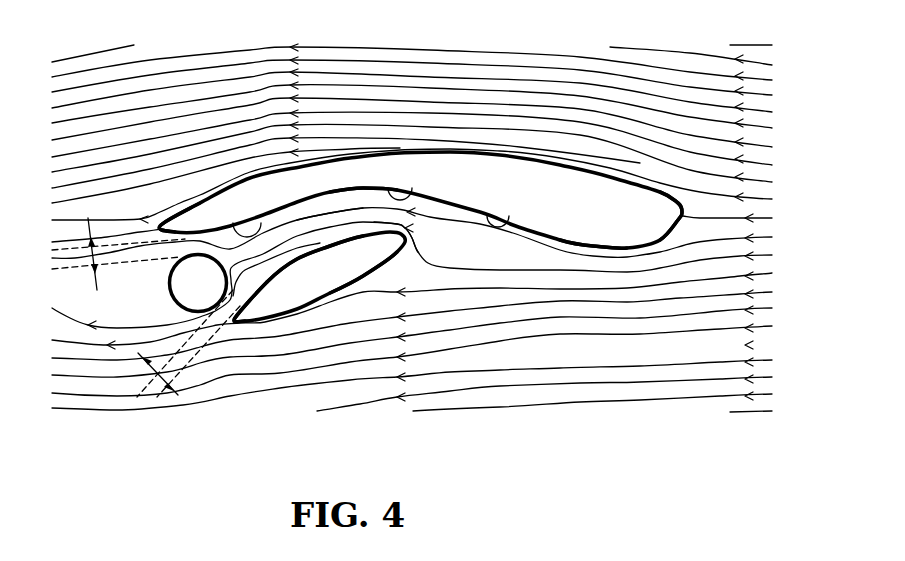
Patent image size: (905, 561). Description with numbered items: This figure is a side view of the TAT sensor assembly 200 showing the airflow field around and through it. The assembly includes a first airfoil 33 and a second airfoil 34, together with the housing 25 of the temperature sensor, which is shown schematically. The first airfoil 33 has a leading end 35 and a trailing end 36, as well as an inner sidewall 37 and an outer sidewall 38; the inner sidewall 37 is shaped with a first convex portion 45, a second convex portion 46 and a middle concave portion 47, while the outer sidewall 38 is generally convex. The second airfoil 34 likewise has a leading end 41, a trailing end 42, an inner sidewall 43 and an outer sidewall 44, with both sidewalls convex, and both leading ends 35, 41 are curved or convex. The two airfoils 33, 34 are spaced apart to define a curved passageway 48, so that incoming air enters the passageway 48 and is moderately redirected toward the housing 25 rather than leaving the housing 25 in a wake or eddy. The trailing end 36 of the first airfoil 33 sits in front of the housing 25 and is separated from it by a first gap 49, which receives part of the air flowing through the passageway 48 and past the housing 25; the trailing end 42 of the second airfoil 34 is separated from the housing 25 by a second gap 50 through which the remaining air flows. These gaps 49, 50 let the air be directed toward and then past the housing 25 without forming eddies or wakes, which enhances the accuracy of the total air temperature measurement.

The TAT sensor assembly 200 is at (555, 40).
The first airfoil 33 is at (582, 150).
The trailing end 36 is at (160, 225).
The leading end 35 is at (702, 218).
The second convex portion 46 is at (265, 217).
The middle concave portion 47 is at (413, 193).
The inner sidewall 37 is at (518, 220).
The outer sidewall 38 is at (368, 187).
The curved passageway 48 is at (335, 220).
The first convex portion 45 is at (577, 244).
The housing 25 is at (158, 283).
The second airfoil 34 is at (319, 322).
The trailing end 42 is at (233, 322).
The inner sidewall 43 is at (296, 257).
The outer sidewall 44 is at (352, 290).
The leading end 41 is at (412, 232).
The first gap 49 is at (55, 251).
The second gap 50 is at (158, 378).